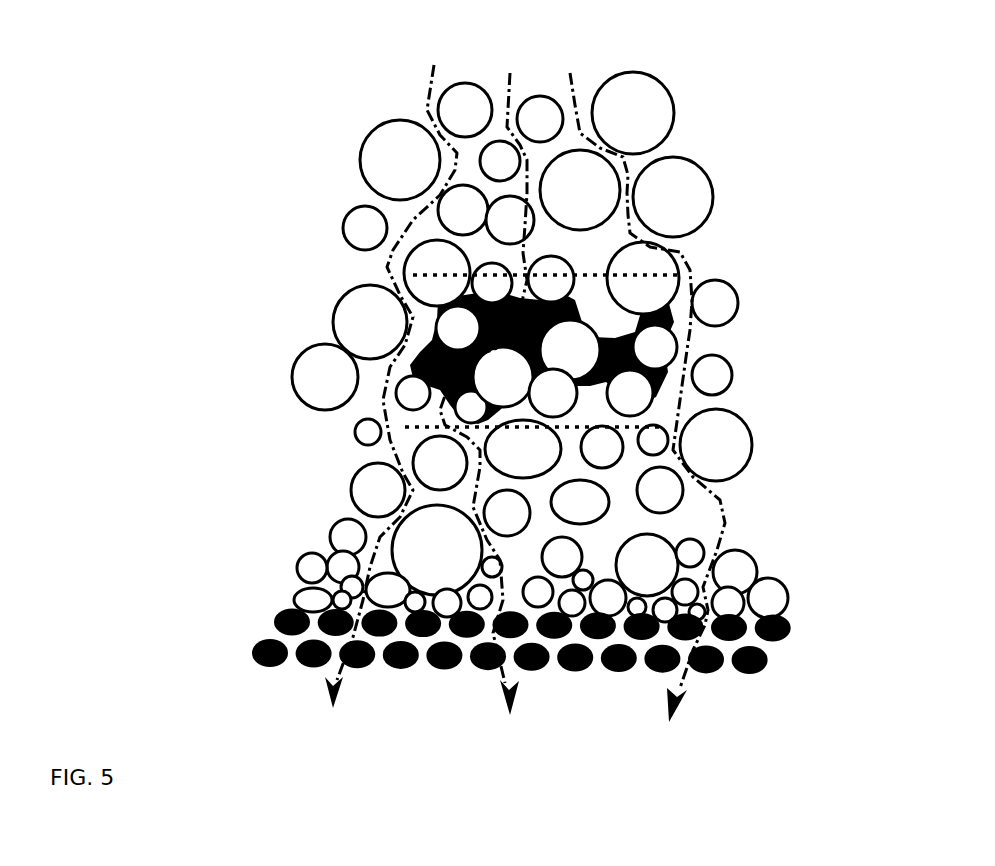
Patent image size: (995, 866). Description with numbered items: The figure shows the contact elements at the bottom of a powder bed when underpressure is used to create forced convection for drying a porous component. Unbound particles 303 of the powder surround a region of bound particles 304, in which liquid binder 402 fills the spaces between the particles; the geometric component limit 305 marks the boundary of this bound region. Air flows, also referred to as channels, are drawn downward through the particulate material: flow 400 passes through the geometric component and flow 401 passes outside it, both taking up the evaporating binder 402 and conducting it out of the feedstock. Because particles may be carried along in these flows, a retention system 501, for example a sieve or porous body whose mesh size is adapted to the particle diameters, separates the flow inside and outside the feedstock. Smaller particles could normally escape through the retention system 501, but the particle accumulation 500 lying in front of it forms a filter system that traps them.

The unbound particle 303 is at (385, 154).
The bound particle 304 is at (649, 283).
The geometric component limit 305 is at (397, 412).
The flow direction of the forced ventilation through the geometric component 400 is at (492, 107).
The flow direction of the forced ventilation outside the geometric component 401 is at (380, 276).
The liquid binder 402 is at (678, 304).
The particle accumulation 500 is at (331, 585).
The retention system 501 is at (291, 665).